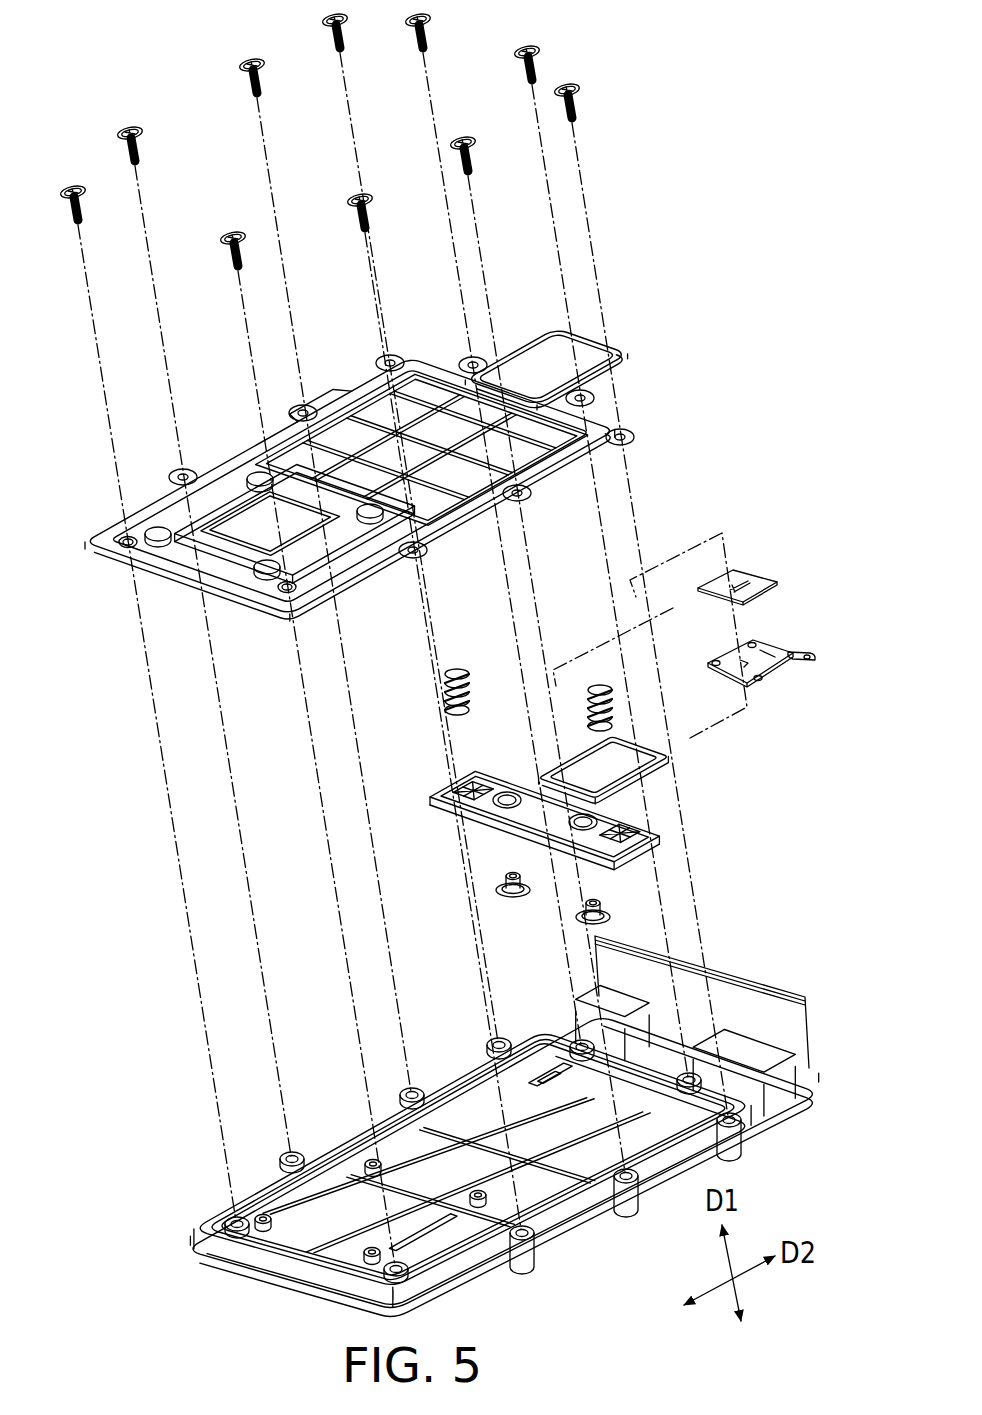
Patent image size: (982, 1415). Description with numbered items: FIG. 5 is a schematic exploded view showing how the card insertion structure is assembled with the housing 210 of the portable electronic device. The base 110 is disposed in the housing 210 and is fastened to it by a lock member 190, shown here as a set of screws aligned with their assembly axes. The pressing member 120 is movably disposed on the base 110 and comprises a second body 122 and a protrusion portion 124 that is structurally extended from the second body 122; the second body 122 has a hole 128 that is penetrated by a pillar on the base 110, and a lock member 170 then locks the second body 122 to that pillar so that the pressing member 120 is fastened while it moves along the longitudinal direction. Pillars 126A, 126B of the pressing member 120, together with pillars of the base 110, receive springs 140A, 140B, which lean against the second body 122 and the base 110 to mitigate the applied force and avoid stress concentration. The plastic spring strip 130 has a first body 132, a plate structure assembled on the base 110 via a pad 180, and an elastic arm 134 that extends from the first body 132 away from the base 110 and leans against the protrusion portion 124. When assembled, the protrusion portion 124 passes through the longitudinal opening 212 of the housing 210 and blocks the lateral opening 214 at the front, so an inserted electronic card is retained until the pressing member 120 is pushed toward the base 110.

The base 110 is at (102, 560).
The pressing member 120 is at (59, 1075).
The second body 122 is at (658, 843).
The protrusion portion 124 is at (660, 782).
The pillar 126A is at (470, 787).
The pillar 126B is at (650, 825).
The hole 128 is at (578, 818).
The plastic spring strip 130 is at (789, 671).
The first body 132 is at (773, 687).
The elastic arm 134 is at (815, 663).
The spring 140A is at (466, 673).
The spring 140B is at (598, 688).
The lock member 170 is at (590, 918).
The pad 180 is at (762, 586).
The lock member 190 is at (584, 50).
The housing 210 is at (529, 1126).
The longitudinal opening 212 is at (662, 1072).
The lateral opening 214 is at (543, 1079).